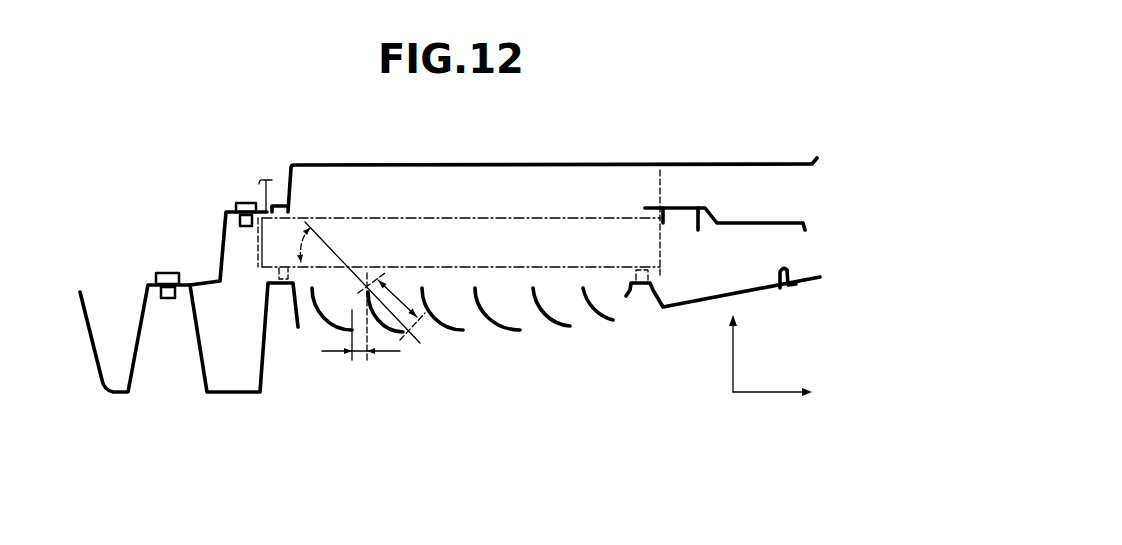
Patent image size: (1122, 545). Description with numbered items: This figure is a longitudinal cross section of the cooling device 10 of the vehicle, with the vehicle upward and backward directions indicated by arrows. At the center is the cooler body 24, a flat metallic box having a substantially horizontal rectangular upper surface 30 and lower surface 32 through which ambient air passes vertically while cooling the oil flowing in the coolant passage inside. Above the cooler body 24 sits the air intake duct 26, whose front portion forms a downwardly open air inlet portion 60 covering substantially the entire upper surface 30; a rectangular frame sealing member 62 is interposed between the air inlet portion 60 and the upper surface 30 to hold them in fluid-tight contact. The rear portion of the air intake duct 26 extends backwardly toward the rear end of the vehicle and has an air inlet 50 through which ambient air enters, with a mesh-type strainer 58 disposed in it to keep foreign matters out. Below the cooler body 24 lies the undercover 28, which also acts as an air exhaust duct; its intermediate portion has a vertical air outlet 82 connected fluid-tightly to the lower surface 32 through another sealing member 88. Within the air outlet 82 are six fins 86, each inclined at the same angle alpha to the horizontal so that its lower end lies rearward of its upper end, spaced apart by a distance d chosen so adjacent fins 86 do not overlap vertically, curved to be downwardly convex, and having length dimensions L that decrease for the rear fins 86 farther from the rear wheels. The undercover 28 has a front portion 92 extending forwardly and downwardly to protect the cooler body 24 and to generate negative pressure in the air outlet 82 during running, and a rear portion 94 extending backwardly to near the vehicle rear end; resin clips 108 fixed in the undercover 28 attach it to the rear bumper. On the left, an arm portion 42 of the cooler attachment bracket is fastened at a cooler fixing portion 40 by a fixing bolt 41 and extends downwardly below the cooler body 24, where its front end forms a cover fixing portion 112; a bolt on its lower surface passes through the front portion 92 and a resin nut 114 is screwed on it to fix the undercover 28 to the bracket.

The cooling device 10 is at (783, 122).
The cooler body 24 is at (427, 230).
The air intake duct 26 is at (362, 148).
The undercover 28 is at (615, 355).
The upper surface 30 is at (558, 218).
The lower surface 32 is at (490, 270).
The cooler fixing portion 40 is at (213, 212).
The fixing bolt 41 is at (241, 202).
The arm portion 42 is at (222, 245).
The air inlet 50 is at (730, 163).
The mesh-type strainer 58 is at (662, 193).
The air inlet portion 60 is at (487, 163).
The sealing member 62 is at (650, 217).
The air outlet 82 is at (295, 313).
The fin 86 is at (441, 326).
The sealing member 88 is at (652, 272).
The front portion 92 is at (223, 394).
The rear portion 94 is at (715, 300).
The resin clip 108 is at (787, 268).
The cover fixing portion 112 is at (187, 317).
The resin nut 114 is at (163, 300).